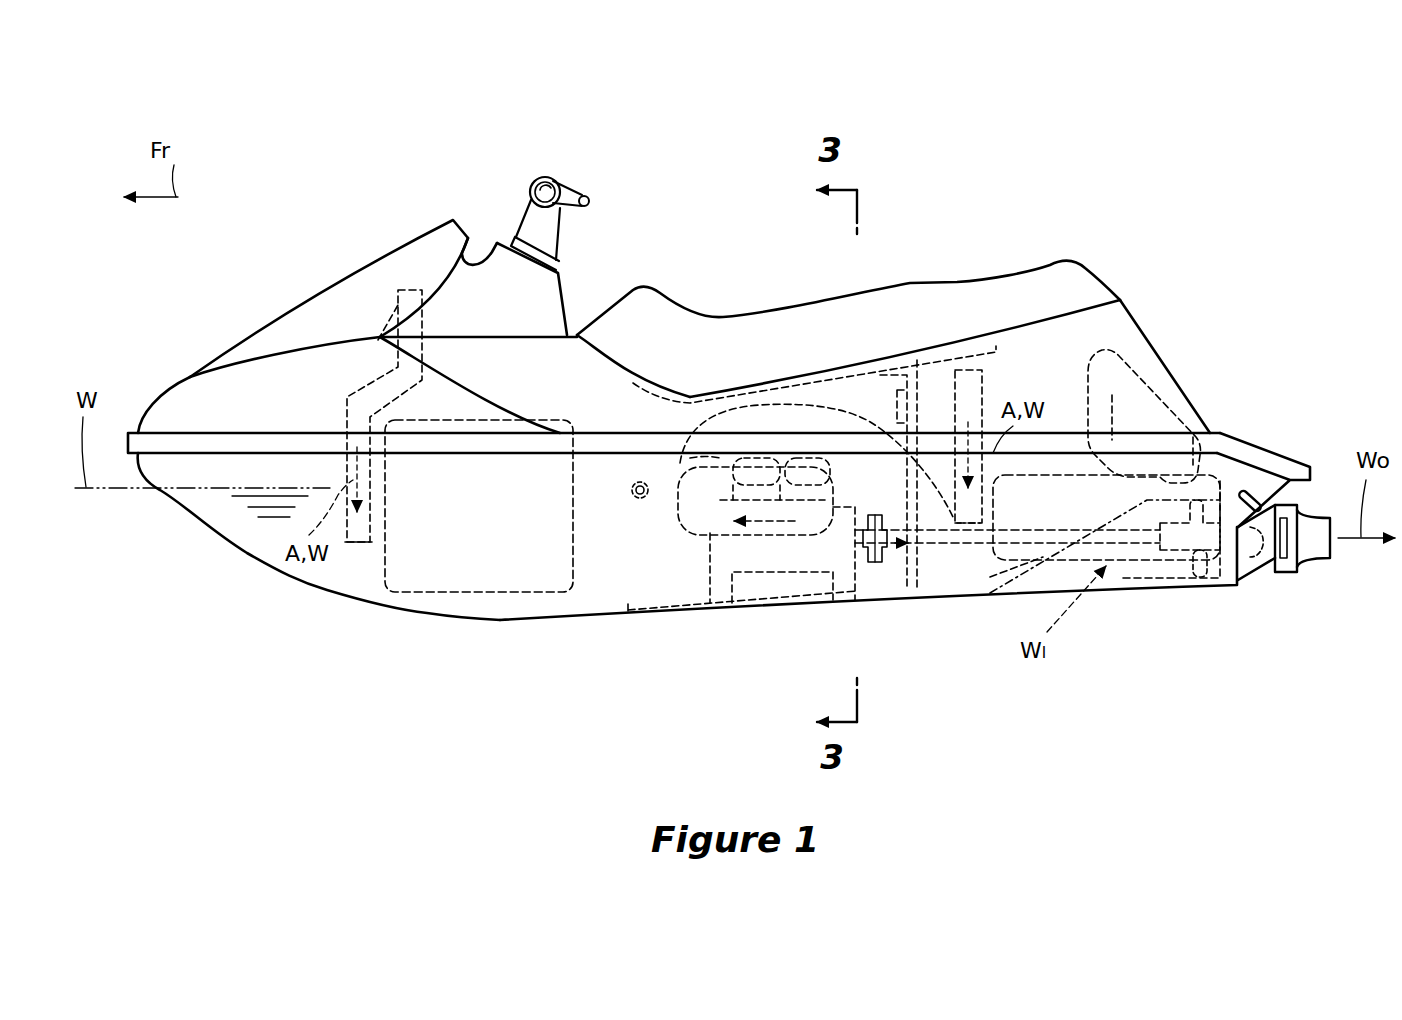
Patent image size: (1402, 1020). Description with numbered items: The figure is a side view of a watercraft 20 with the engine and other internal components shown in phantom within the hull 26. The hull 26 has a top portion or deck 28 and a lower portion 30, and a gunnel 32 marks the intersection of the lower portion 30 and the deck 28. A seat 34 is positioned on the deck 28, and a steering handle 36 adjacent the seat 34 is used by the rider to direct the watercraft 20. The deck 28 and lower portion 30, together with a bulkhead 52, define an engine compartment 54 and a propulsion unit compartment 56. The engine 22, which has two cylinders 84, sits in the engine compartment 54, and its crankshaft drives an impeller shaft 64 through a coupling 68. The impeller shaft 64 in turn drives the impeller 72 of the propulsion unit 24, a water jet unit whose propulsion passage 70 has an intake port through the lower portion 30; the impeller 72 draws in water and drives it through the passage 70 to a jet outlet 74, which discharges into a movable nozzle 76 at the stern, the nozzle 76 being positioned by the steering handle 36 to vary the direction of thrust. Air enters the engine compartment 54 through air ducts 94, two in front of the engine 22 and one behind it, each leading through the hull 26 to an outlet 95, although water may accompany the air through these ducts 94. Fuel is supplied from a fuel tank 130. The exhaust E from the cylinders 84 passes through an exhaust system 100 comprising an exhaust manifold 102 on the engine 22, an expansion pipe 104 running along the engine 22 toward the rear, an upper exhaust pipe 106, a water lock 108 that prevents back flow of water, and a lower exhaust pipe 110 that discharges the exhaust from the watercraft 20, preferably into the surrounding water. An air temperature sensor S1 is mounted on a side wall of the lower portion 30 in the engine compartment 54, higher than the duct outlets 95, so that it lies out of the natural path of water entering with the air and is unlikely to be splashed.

The watercraft 20 is at (1077, 150).
The engine 22 is at (721, 565).
The propulsion unit 24 is at (1152, 589).
The hull 26 is at (1220, 320).
The deck 28 is at (180, 397).
The lower portion 30 is at (253, 540).
The gunnel 32 is at (630, 437).
The seat 34 is at (957, 282).
The steering handle 36 is at (587, 190).
The bulkhead 52 is at (917, 420).
The engine compartment 54 is at (265, 395).
The propulsion unit compartment 56 is at (1070, 337).
The impeller shaft 64 is at (975, 547).
The coupling 68 is at (866, 565).
The propulsion passage 70 is at (1127, 580).
The impeller 72 is at (1208, 559).
The jet outlet 74 is at (1255, 555).
The nozzle 76 is at (1317, 558).
The cylinders 84 is at (808, 468).
The air ducts 94 is at (392, 306).
The outlet 95 is at (355, 547).
The exhaust system 100 is at (688, 523).
The exhaust manifold 102 is at (777, 537).
The expansion pipe 104 is at (775, 387).
The upper exhaust pipe 106 is at (885, 607).
The water lock 108 is at (1085, 415).
The lower exhaust pipe 110 is at (1167, 397).
The fuel tank 130 is at (455, 575).
The exhaust E is at (756, 530).
The air temperature sensor S1 is at (625, 492).